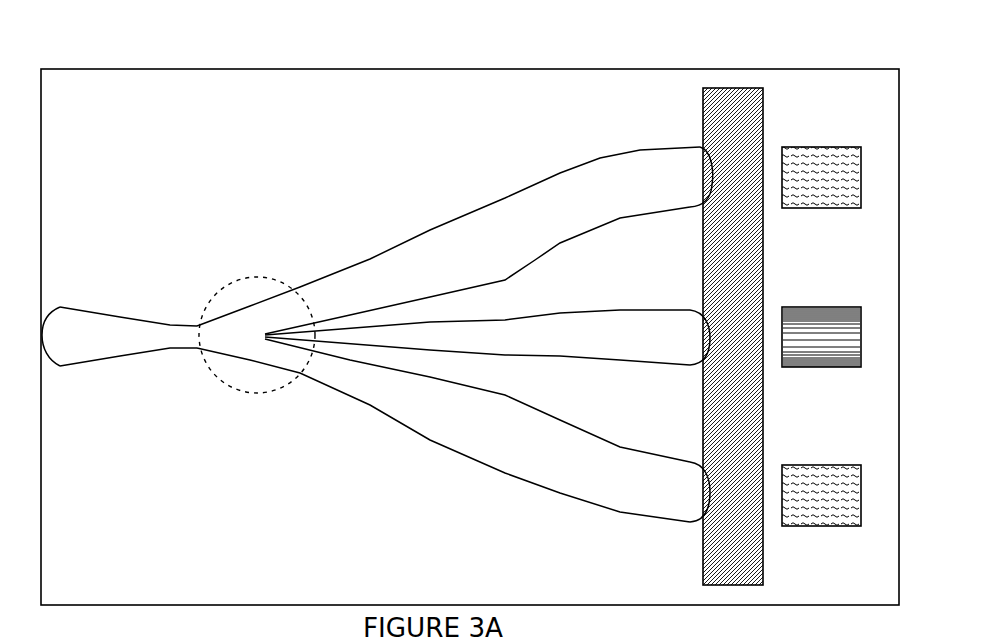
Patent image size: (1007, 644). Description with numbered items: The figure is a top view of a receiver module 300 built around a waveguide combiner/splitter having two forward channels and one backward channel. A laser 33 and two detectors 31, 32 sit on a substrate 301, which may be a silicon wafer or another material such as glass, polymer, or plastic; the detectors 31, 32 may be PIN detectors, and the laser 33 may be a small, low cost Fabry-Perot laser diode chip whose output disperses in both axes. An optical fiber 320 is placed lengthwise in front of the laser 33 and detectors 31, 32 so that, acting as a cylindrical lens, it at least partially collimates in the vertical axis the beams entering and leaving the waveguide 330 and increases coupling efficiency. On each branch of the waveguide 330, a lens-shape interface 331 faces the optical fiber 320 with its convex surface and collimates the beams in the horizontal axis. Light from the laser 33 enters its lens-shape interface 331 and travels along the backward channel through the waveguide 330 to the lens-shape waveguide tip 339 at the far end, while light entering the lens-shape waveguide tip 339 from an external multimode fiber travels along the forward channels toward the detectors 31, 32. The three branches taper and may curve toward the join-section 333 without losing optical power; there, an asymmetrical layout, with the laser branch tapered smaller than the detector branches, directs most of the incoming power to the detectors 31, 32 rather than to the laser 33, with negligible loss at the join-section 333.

The receiver module 300 is at (487, 32).
The substrate 301 is at (135, 32).
The optical fiber 320 is at (717, 88).
The detector 31 is at (835, 147).
The laser 33 is at (830, 306).
The detector 32 is at (827, 465).
The lens-shape waveguide tip 339 is at (52, 307).
The join-section 333 is at (213, 293).
The waveguide 330 is at (455, 310).
The lens-shape interfaces 331 is at (703, 462).